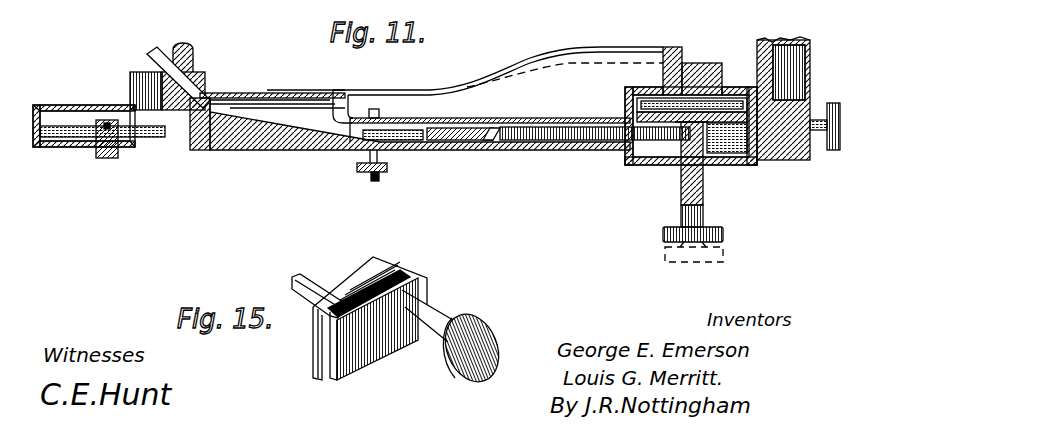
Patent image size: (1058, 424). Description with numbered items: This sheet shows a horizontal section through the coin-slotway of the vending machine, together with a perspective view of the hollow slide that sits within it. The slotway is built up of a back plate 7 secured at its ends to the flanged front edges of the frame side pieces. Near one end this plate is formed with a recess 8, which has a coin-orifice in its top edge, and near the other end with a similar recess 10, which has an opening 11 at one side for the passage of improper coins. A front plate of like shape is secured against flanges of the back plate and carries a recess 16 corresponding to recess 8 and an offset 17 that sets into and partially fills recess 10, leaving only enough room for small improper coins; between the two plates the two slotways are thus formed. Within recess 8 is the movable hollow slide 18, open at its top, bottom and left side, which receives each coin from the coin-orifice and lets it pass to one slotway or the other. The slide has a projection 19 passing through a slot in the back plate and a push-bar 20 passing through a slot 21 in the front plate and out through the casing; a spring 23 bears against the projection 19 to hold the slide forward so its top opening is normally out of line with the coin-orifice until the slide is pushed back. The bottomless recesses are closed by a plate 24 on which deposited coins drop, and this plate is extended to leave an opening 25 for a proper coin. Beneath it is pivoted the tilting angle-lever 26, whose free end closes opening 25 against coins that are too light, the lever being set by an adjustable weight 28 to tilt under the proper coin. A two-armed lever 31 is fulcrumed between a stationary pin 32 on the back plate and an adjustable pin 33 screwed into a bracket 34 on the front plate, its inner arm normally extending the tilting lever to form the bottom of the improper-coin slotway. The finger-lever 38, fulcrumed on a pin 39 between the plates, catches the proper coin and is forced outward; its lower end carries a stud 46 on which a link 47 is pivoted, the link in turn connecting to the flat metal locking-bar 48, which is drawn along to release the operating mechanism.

In FIG. 11, the plate 7 is at (490, 114).
In FIG. 11, the recess 8 is at (637, 104).
In FIG. 11, the recess 10 is at (420, 124).
In FIG. 11, the opening 11 is at (208, 97).
In FIG. 11, the recess 16 is at (630, 165).
In FIG. 11, the offset 17 is at (215, 140).
In FIG. 11, the hollow slide 18 is at (704, 63).
In FIG. 15, the hollow slide 18 is at (412, 292).
In FIG. 11, the projection 19 is at (672, 47).
In FIG. 15, the projection 19 is at (300, 279).
In FIG. 11, the push-bar 20 is at (703, 222).
In FIG. 15, the push-bar 20 is at (440, 323).
In FIG. 11, the slot 21 is at (681, 167).
In FIG. 11, the spring 23 is at (478, 86).
In FIG. 11, the plate 24 is at (570, 141).
In FIG. 11, the opening 25 is at (500, 128).
In FIG. 11, the tilting angle-lever 26 is at (478, 141).
In FIG. 11, the adjustable weight 28 is at (832, 150).
In FIG. 11, the two-armed lever 31 is at (428, 141).
In FIG. 11, the stationary pin 32 is at (379, 113).
In FIG. 11, the adjustable pin 33 is at (372, 181).
In FIG. 11, the bracket 34 is at (360, 167).
In FIG. 11, the lever 38 is at (78, 138).
In FIG. 11, the pin 39 is at (110, 158).
In FIG. 11, the stud 46 is at (62, 98).
In FIG. 11, the link 47 is at (99, 104).
In FIG. 11, the flat metal bar 48 is at (140, 72).